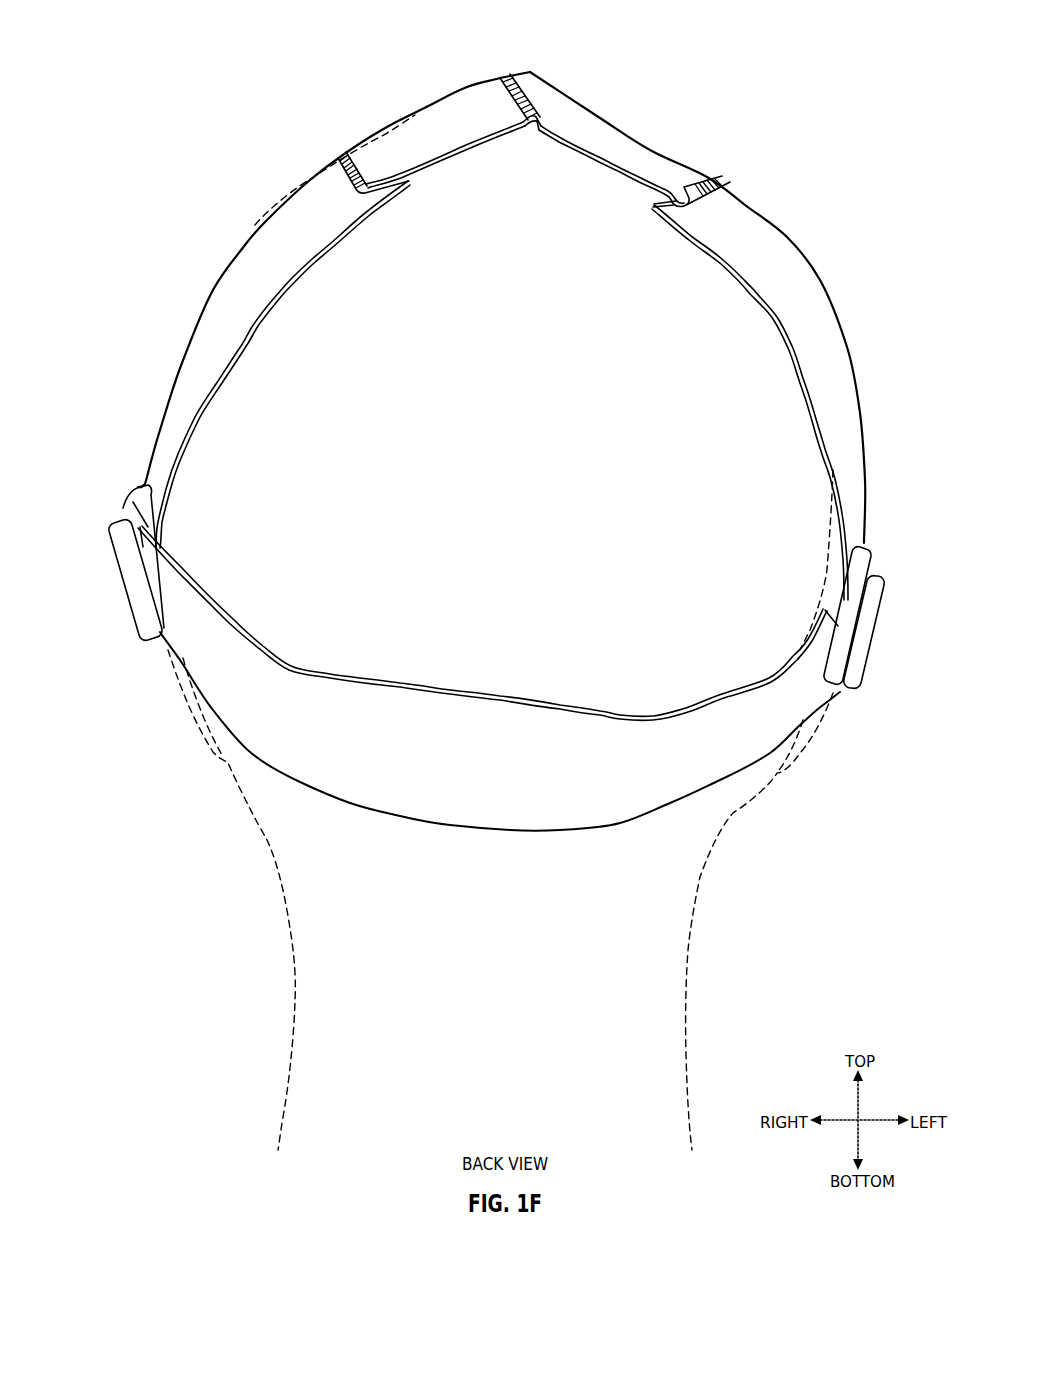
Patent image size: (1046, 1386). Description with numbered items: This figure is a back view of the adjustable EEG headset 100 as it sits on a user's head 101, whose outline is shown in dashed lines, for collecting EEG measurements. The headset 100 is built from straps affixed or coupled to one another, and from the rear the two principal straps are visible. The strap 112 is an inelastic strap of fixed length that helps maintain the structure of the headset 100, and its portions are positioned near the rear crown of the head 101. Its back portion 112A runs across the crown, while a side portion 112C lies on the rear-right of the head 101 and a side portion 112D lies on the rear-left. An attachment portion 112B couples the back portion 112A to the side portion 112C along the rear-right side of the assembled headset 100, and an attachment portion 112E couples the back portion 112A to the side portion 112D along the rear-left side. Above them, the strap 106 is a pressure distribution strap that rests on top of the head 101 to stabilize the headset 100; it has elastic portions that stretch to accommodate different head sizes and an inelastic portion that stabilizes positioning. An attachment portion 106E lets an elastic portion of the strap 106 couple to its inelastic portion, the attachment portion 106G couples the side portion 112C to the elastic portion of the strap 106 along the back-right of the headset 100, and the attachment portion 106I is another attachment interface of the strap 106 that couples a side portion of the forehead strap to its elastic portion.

The adjustable EEG headset 100 is at (188, 141).
The user's head 101 is at (457, 370).
The pressure distribution strap 106 is at (426, 92).
The attachment portion 106E is at (505, 78).
The attachment portion 106G is at (343, 160).
The attachment portion 106I is at (715, 177).
The strap 112 is at (387, 804).
The back portion 112A is at (479, 695).
The attachment portion 112B is at (122, 584).
The side portion 112C is at (248, 356).
The side portion 112D is at (788, 350).
The attachment portion 112E is at (882, 616).